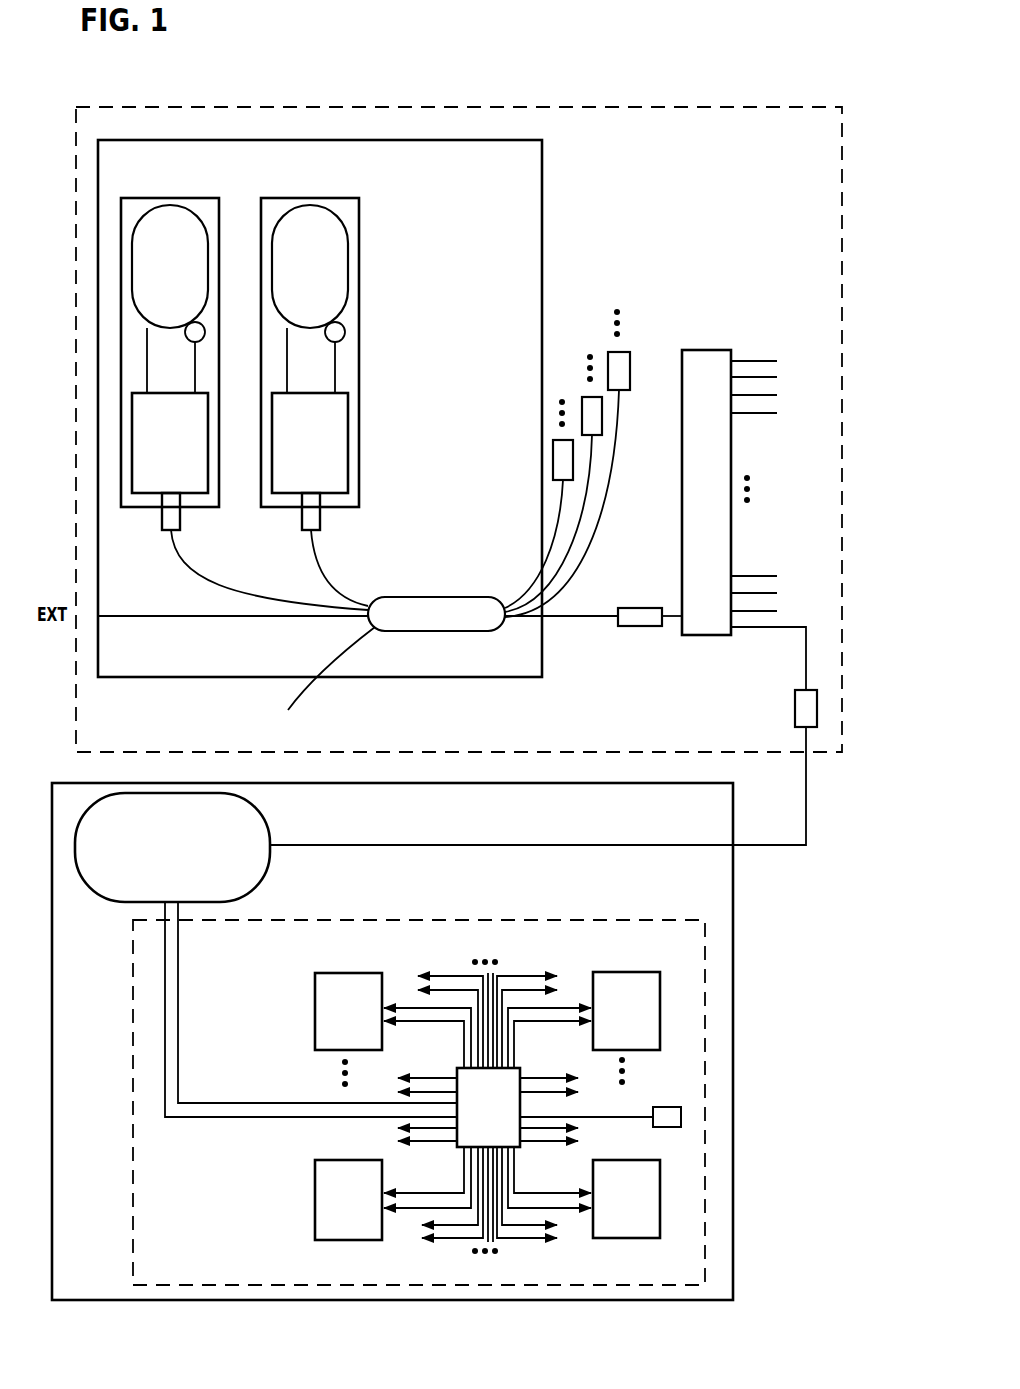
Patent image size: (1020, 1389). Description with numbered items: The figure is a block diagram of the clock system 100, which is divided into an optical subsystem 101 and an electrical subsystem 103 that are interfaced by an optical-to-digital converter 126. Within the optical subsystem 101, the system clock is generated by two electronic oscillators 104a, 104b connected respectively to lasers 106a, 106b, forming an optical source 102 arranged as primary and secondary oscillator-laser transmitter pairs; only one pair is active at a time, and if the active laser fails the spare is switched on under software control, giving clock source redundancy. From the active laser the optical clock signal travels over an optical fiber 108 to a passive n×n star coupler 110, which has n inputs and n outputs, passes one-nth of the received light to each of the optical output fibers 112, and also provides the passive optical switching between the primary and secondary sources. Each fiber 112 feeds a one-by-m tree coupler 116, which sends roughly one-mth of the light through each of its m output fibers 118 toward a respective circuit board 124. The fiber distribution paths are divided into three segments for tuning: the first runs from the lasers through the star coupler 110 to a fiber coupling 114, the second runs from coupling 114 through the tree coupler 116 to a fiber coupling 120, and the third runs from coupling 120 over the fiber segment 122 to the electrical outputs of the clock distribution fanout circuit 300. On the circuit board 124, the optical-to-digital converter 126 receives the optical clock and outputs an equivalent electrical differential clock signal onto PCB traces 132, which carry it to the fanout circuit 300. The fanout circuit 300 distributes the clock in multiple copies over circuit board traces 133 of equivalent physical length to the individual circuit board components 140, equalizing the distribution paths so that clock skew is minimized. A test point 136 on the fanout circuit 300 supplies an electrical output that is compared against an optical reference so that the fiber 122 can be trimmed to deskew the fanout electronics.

The light control system 100 is at (760, 63).
The optical subsystem 101 is at (440, 107).
The optical source 102 is at (543, 252).
The electrical subsystem 103 is at (433, 920).
The electronic oscillator 104a is at (198, 215).
The electronic oscillator 104b is at (283, 215).
The laser 106a is at (153, 472).
The laser 106b is at (335, 462).
The optical fiber 108 is at (181, 523).
The n×n star coupler 110 is at (428, 597).
The optical output fibers 112 is at (595, 593).
The fiber coupling 114 is at (640, 627).
The 1×m tree coupler 116 is at (700, 350).
The output fibers 118 is at (798, 610).
The fiber coupling 120 is at (795, 705).
The fiber segment 122 is at (745, 848).
The circuit board 124 is at (733, 1025).
The optical-to-digital converter 126 is at (266, 818).
The PCB traces 132 is at (178, 1040).
The circuit board traces 133 is at (512, 1240).
The test point 136 is at (600, 1118).
The circuit board components 140 is at (623, 972).
The clock distribution fanout circuit 300 is at (525, 1068).